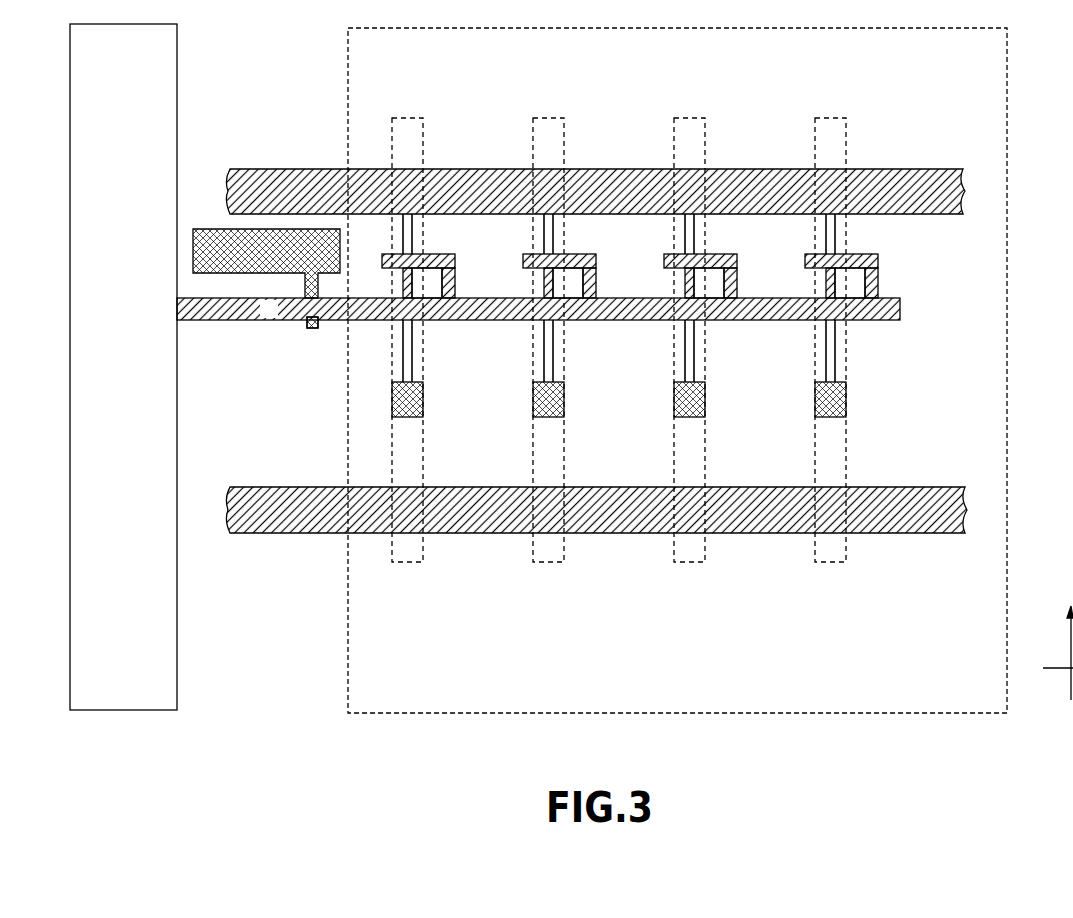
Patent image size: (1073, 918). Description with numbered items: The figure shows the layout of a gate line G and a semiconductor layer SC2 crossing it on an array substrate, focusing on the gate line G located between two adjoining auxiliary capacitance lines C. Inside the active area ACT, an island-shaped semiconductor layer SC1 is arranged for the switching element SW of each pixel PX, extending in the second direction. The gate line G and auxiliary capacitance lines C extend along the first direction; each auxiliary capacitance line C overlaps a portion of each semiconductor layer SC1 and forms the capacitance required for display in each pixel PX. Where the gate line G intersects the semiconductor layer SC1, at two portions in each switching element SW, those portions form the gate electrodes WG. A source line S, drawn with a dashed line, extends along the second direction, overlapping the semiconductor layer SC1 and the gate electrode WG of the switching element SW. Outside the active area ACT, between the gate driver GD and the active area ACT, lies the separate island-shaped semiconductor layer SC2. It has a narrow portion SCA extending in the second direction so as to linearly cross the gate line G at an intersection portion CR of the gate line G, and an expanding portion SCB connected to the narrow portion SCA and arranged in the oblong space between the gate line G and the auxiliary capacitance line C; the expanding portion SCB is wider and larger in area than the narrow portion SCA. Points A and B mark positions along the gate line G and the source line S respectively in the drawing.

The gate driver GD is at (123, 367).
The active area ACT is at (1009, 82).
The auxiliary capacitance line C is at (965, 191).
The gate line G is at (901, 304).
The point A on gate line A is at (269, 309).
The source line S is at (407, 116).
The point B is at (407, 212).
The gate electrode WG is at (402, 252).
The switching element SW is at (436, 248).
The semiconductor layer SC1 is at (424, 399).
The pixel PX is at (501, 434).
The semiconductor layer SC2 is at (262, 222).
The expanding portion SCB is at (240, 275).
The narrow portion SCA is at (313, 329).
The intersection portion CR is at (320, 331).